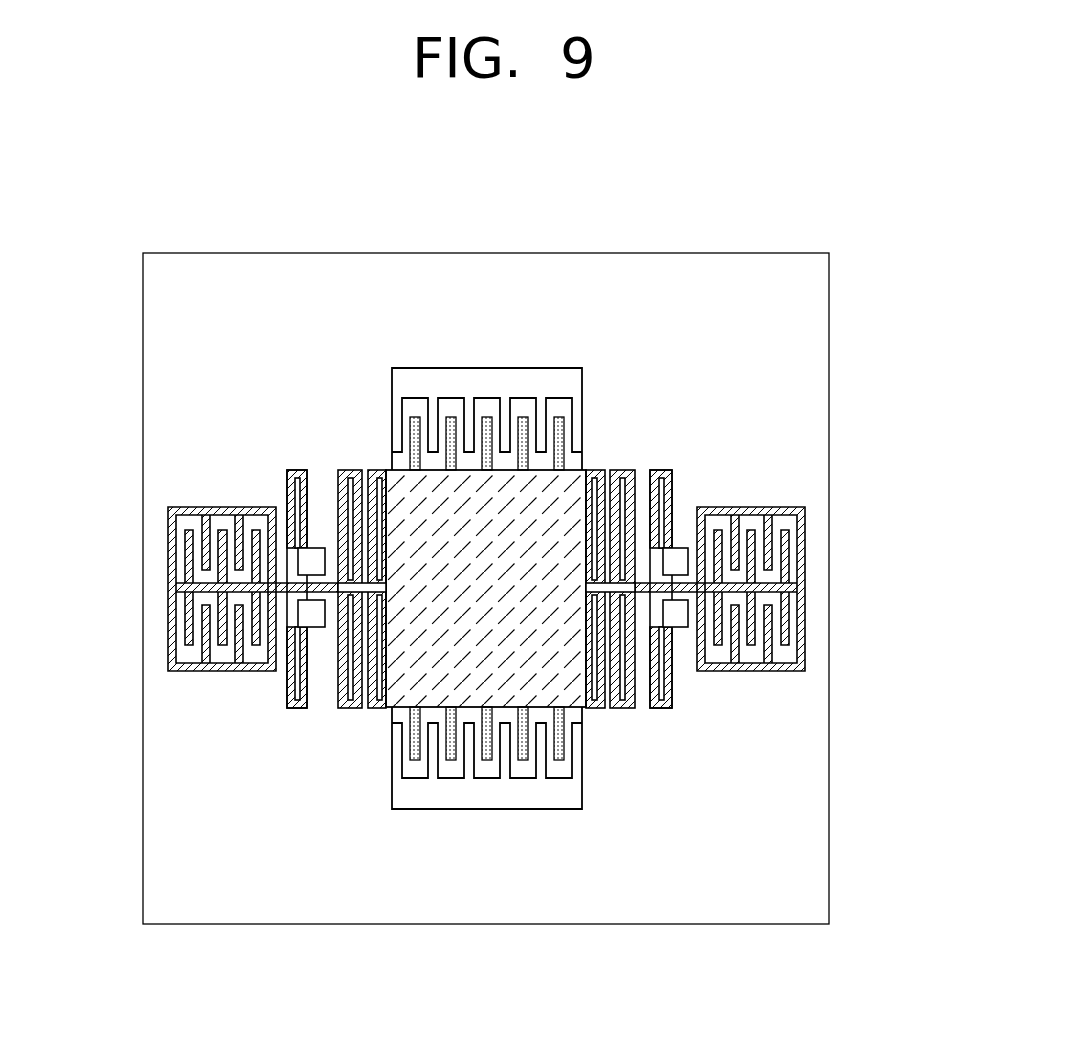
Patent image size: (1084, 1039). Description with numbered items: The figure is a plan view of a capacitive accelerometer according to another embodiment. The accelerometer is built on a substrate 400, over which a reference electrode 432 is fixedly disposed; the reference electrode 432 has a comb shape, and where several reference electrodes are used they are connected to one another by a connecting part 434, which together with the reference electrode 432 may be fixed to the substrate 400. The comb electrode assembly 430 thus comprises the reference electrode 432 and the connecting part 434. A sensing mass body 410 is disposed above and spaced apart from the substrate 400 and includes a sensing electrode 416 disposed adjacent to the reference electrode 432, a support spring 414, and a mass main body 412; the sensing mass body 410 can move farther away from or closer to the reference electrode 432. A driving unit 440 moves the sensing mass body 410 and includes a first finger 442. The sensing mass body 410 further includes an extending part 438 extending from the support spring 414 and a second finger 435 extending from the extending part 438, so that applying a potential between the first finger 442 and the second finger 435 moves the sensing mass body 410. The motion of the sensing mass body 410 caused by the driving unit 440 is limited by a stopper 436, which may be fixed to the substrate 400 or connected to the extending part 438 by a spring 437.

The substrate 400 is at (818, 387).
The sensing mass body 410 is at (536, 746).
The mass main body 412 is at (598, 702).
The support spring 414 is at (628, 706).
The sensing electrode 416 is at (580, 692).
The comb electrode 430 is at (487, 311).
The reference electrode 432 is at (468, 425).
The connecting part 434 is at (445, 385).
The second finger 435 is at (178, 634).
The stopper 436 is at (312, 548).
The spring 437 is at (297, 708).
The extending part 438 is at (197, 588).
The driving unit 440 is at (805, 595).
The first finger 442 is at (772, 633).